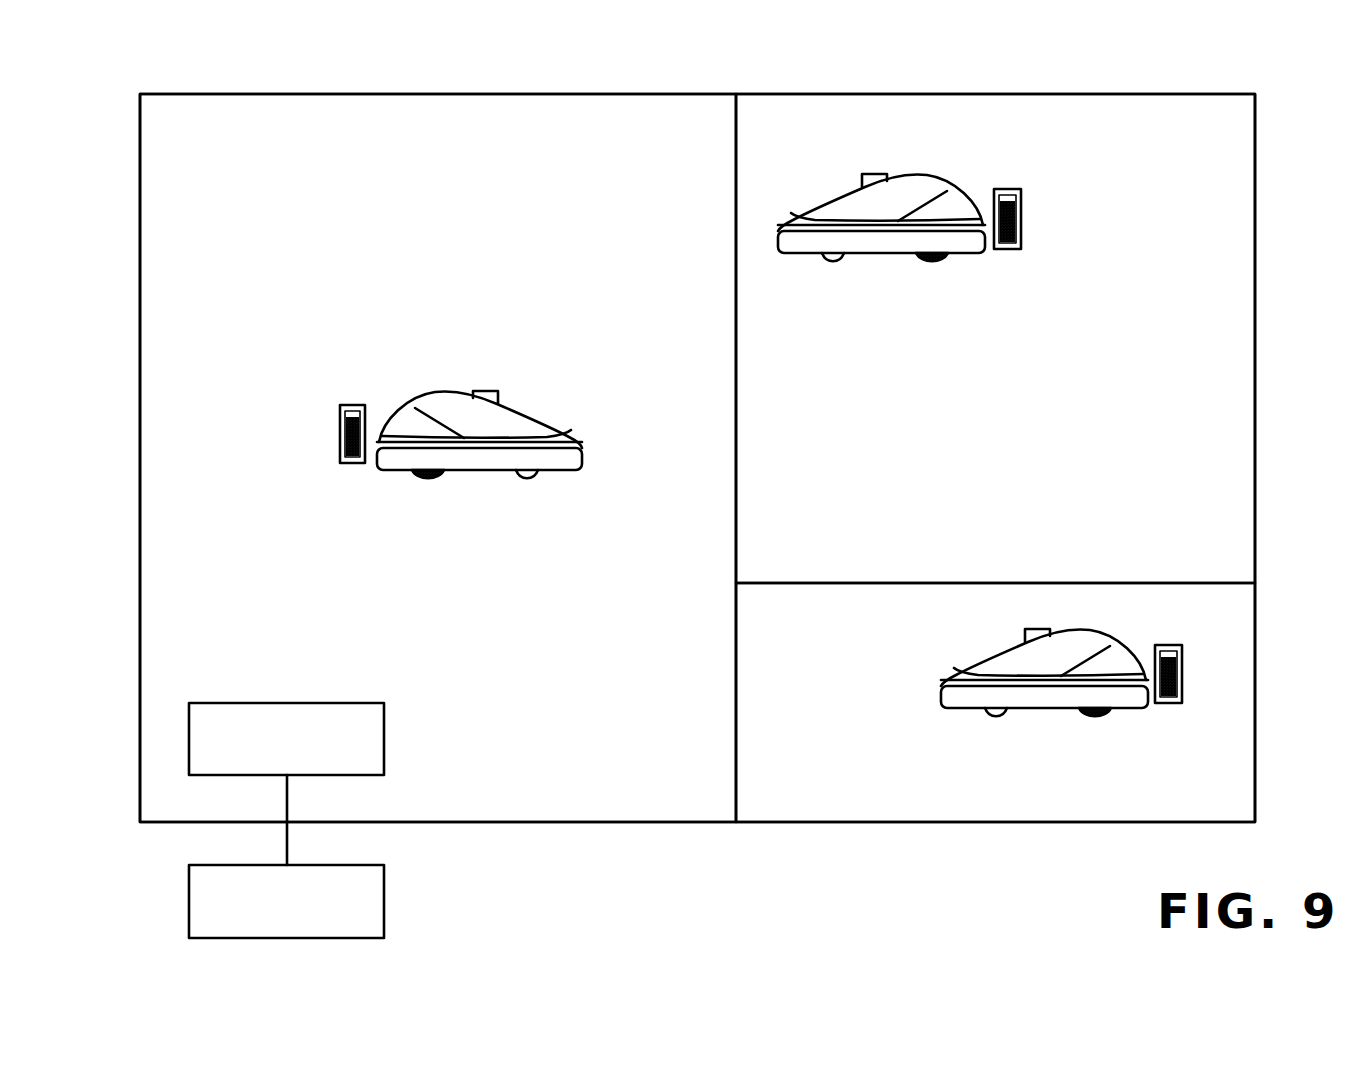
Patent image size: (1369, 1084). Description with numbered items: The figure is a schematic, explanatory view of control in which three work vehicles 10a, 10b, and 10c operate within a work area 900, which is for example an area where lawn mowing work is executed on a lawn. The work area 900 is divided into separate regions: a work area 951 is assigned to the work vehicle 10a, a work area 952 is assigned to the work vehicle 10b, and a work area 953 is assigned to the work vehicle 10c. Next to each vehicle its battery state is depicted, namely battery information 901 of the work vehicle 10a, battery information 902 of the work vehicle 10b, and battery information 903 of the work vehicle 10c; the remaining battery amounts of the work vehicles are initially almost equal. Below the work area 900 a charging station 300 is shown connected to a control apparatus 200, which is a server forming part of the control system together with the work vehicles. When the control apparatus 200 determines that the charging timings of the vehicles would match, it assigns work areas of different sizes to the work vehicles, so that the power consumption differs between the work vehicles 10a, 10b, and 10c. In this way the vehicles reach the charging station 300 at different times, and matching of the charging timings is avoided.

The work area 900 is at (840, 94).
The work area 951 is at (158, 168).
The work area 952 is at (1242, 167).
The work area 953 is at (1242, 683).
The battery information 901 is at (352, 404).
The battery information 902 is at (1003, 188).
The battery information 903 is at (1168, 644).
The work vehicle 10a is at (485, 368).
The work vehicle 10b is at (970, 278).
The work vehicle 10c is at (920, 718).
The charging station 300 is at (384, 738).
The control apparatus 200 is at (384, 898).